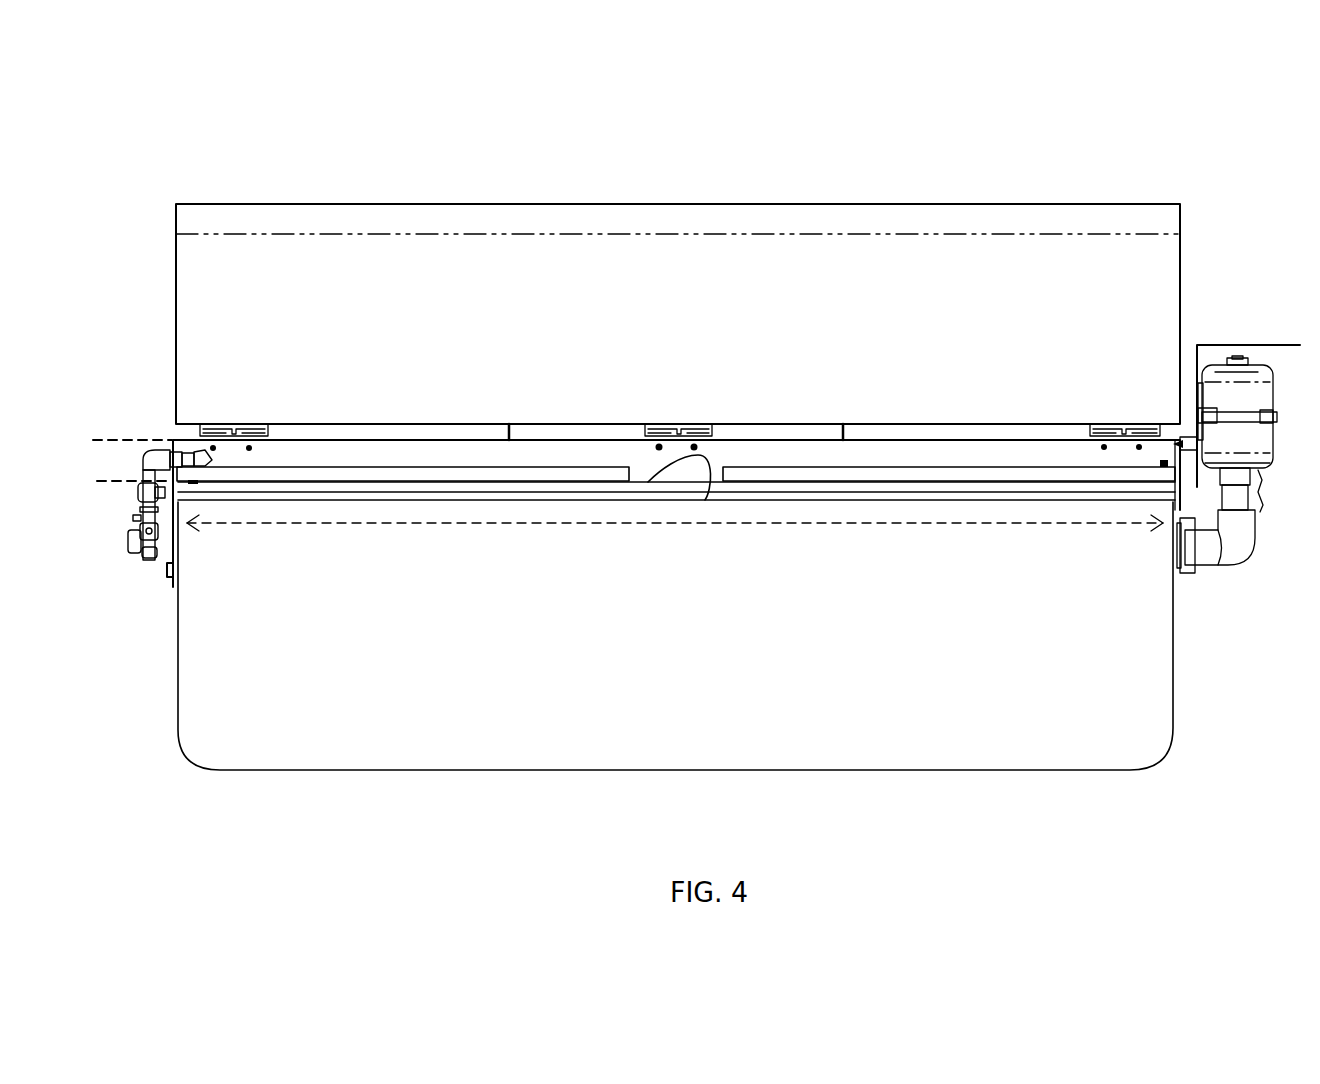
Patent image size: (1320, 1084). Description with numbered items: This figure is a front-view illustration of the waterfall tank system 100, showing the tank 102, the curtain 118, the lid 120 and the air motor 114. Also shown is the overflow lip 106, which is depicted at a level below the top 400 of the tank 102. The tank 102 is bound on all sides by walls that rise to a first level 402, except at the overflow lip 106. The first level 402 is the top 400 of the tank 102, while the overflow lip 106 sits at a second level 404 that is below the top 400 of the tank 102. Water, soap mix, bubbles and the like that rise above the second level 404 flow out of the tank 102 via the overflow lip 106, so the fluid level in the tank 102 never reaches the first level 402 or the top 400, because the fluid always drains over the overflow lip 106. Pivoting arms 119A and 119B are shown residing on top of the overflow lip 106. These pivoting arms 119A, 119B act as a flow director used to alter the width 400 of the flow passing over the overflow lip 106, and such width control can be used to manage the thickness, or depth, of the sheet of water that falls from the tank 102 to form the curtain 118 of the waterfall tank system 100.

The waterfall tank system 100 is at (192, 118).
The tank 102 is at (365, 458).
The overflow lip 106 is at (705, 500).
The air motor 114 is at (1257, 443).
The curtain 118 is at (402, 702).
The pivoting arm 119A is at (518, 470).
The pivoting arm 119B is at (985, 468).
The lid 120 is at (563, 205).
The top of the tank 400 is at (963, 435).
The first level 402 is at (127, 440).
The second level 404 is at (110, 482).